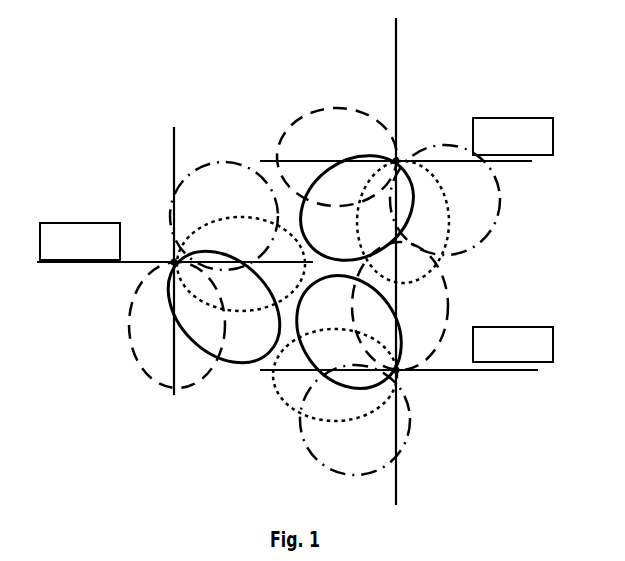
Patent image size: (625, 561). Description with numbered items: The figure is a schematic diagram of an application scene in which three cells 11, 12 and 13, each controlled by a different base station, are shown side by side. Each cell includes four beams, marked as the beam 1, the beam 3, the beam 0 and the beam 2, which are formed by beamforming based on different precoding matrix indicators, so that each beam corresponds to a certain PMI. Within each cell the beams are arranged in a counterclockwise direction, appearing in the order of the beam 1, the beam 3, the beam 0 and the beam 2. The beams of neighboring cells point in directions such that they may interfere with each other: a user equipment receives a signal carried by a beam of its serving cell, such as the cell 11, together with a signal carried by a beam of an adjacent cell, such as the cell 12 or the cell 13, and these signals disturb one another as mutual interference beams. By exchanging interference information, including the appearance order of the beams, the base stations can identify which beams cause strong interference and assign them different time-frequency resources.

The beam corresponding to PMI= 0 is at (208, 220).
The beam corresponding to PMI= 1 is at (330, 104).
The beam corresponding to PMI= 2 is at (215, 158).
The beam corresponding to PMI= 3 is at (306, 240).
The cell 11 is at (175, 261).
The cell 12 is at (406, 261).
The cell 13 is at (406, 350).